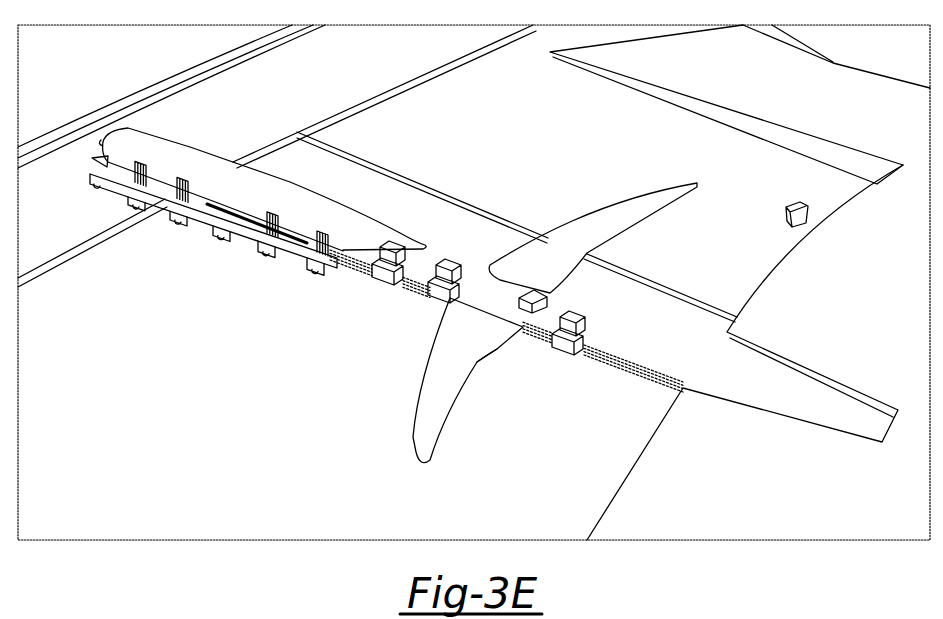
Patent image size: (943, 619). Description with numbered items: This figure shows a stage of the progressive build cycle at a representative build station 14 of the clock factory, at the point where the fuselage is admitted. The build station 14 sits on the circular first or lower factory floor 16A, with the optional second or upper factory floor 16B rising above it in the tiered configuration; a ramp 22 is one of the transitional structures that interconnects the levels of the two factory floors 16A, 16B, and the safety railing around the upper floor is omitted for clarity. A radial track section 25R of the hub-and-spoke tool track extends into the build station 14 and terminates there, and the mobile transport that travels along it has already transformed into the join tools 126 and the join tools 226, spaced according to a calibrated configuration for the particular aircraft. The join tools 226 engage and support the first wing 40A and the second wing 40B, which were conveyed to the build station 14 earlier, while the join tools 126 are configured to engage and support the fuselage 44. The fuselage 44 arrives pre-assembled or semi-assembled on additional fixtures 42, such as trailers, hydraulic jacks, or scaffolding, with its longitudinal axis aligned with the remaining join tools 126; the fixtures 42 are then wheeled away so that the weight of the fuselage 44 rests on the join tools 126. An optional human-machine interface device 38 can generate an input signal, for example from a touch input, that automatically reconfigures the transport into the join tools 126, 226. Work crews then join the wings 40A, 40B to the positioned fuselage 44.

The build station 14 is at (162, 424).
The first/lower factory floor 16A is at (462, 143).
The second/upper factory floor 16B is at (845, 328).
The ramp 22 is at (728, 81).
The radial track section 25R is at (632, 362).
The human-machine interface (HMI) device 38 is at (805, 203).
The first wing 40A is at (564, 275).
The second wing 40B is at (452, 346).
The fixtures 42 is at (256, 253).
The fuselage 44 is at (290, 219).
The join tools (first set) 126 is at (451, 275).
The join tools (second set) 226 is at (548, 305).